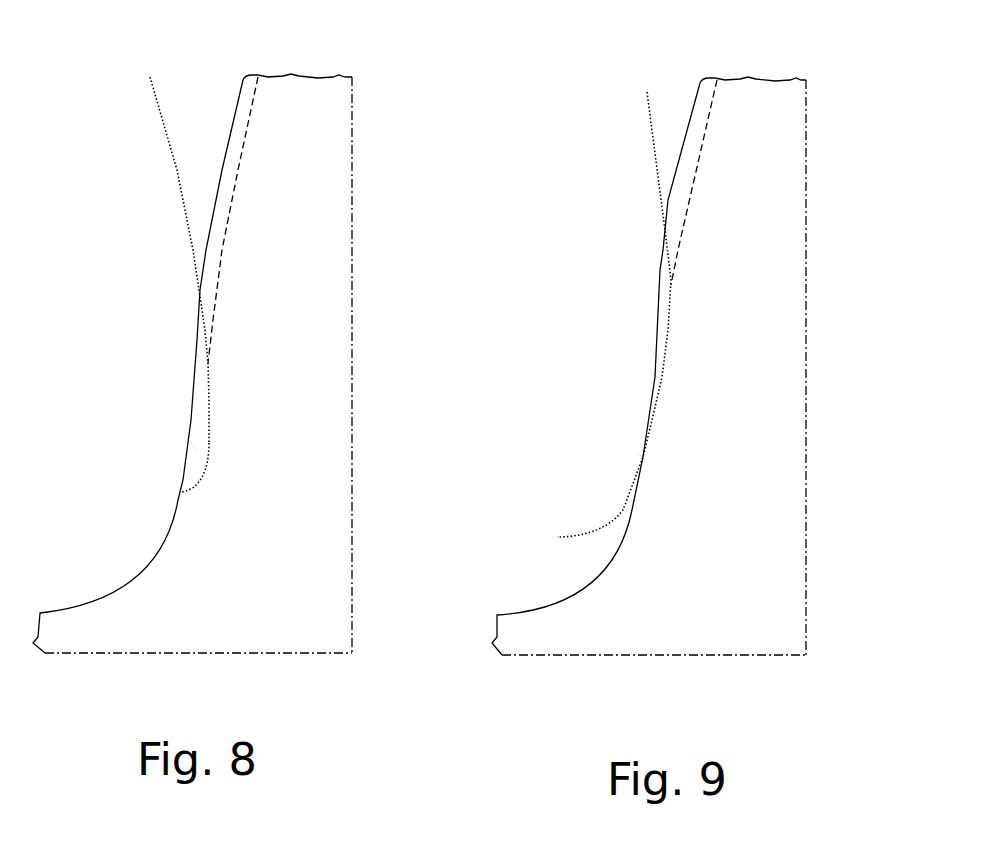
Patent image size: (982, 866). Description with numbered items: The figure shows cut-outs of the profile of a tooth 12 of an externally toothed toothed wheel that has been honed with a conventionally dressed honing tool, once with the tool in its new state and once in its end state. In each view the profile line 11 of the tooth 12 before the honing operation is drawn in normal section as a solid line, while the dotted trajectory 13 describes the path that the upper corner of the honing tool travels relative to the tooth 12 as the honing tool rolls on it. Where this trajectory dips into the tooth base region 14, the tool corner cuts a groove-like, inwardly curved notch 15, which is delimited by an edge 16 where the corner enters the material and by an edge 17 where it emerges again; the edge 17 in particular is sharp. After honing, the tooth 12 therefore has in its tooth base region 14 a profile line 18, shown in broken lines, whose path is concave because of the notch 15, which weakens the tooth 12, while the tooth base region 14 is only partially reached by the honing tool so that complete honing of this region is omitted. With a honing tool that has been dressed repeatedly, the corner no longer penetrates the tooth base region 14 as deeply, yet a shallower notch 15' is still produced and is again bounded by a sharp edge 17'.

In FIG. 8, the profile line 11 is at (233, 113).
In FIG. 9, the profile line 11 is at (692, 105).
In FIG. 8, the tooth 12 is at (272, 359).
In FIG. 9, the tooth 12 is at (729, 352).
In FIG. 8, the trajectory 13 is at (160, 115).
In FIG. 9, the trajectory 13 is at (650, 138).
In FIG. 8, the tooth base region 14 is at (107, 490).
In FIG. 9, the tooth base region 14 is at (565, 480).
In FIG. 8, the notch 15 is at (147, 405).
In FIG. 9, the notch 15' is at (607, 336).
In FIG. 8, the edge 16 is at (200, 358).
In FIG. 8, the edge 17 is at (168, 467).
In FIG. 9, the sharp edge 17' is at (620, 440).
In FIG. 8, the profile line 18 is at (247, 133).
In FIG. 9, the profile line 18 is at (702, 128).